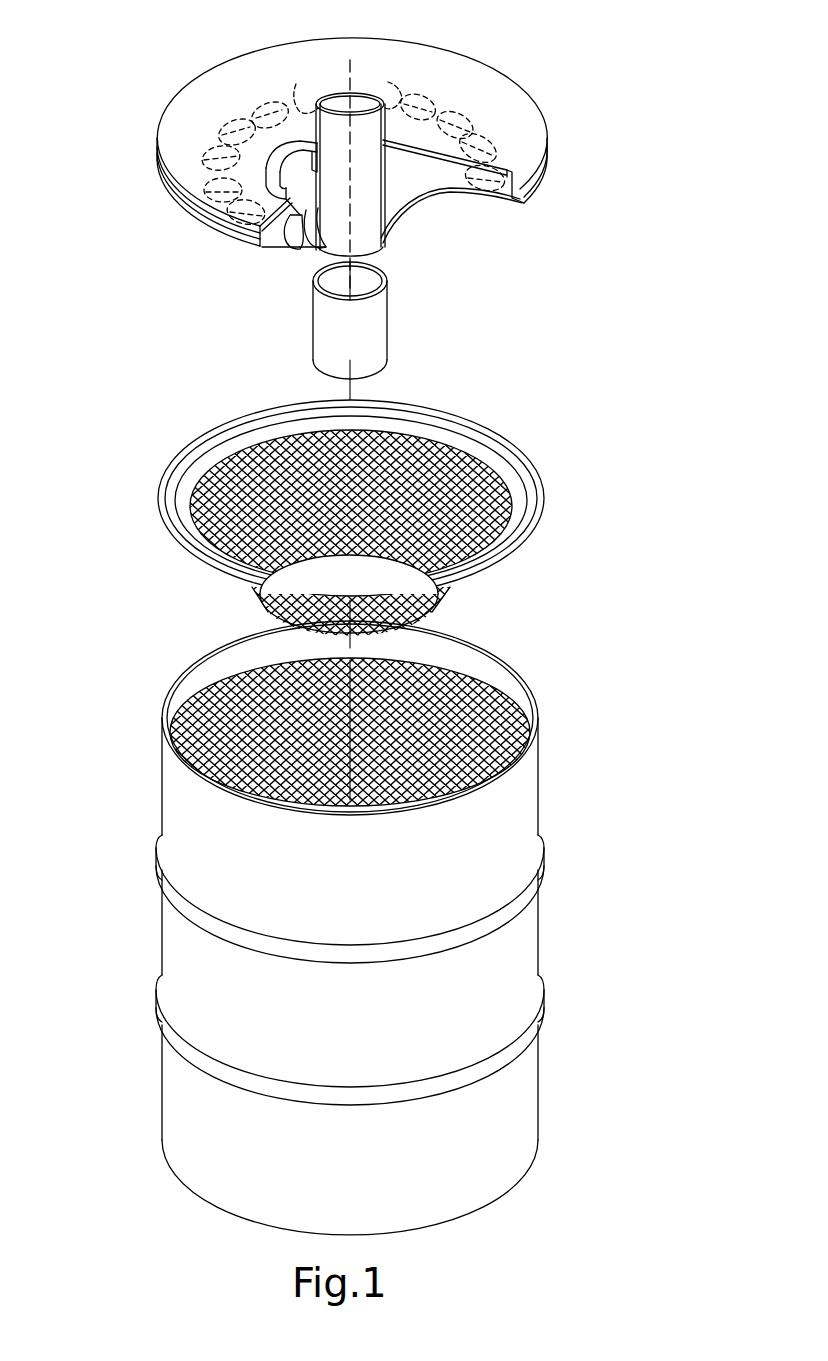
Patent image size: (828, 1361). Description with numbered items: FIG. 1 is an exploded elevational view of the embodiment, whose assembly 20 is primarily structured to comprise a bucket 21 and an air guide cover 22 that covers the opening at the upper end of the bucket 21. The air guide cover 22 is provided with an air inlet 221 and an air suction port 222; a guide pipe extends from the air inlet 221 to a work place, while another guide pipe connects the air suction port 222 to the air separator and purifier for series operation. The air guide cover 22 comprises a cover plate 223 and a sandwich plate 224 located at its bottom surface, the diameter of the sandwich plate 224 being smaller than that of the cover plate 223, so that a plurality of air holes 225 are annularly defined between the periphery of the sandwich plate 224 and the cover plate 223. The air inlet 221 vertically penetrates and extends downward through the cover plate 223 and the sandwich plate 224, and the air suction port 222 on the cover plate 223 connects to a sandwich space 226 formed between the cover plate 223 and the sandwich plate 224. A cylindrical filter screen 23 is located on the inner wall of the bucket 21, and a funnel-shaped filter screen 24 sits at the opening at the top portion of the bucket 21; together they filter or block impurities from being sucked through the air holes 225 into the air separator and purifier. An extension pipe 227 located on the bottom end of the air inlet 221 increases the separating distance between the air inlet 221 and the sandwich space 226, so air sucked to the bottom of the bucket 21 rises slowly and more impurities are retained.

The filter assembly 20 is at (653, 381).
The bucket 21 is at (506, 836).
The air guide cover 22 is at (531, 172).
The cylindrical filter screen 23 is at (484, 733).
The funnel-shaped filter screen 24 is at (470, 527).
The air inlet 221 is at (343, 105).
The air suction port 222 is at (298, 157).
The cover plate 223 is at (496, 132).
The sandwich plate 224 is at (460, 197).
The air holes 225 is at (296, 245).
The sandwich space 226 is at (435, 188).
The extension pipe 227 is at (363, 342).